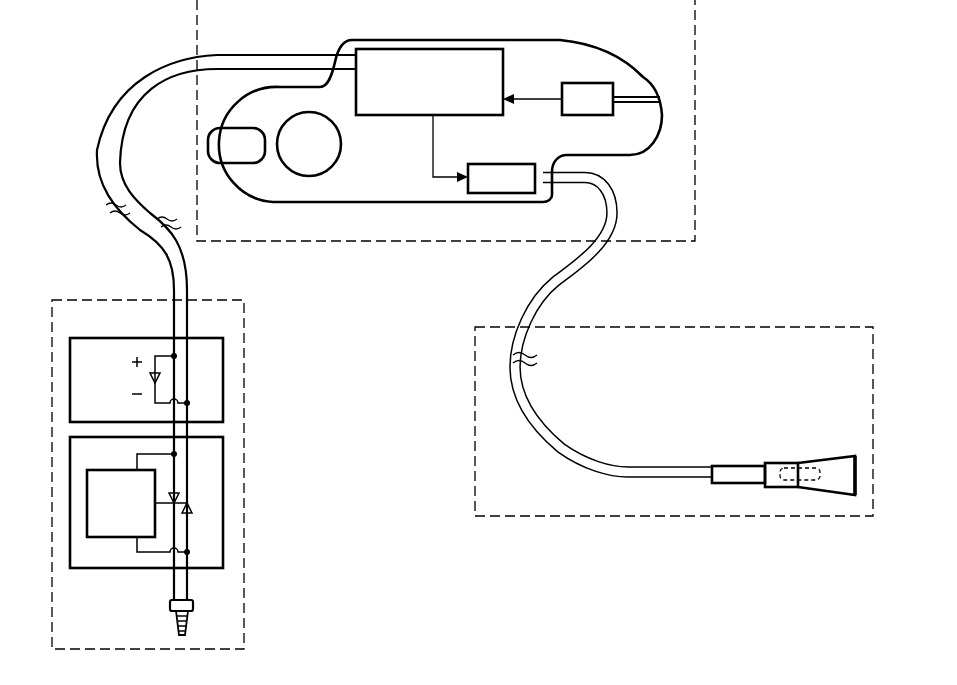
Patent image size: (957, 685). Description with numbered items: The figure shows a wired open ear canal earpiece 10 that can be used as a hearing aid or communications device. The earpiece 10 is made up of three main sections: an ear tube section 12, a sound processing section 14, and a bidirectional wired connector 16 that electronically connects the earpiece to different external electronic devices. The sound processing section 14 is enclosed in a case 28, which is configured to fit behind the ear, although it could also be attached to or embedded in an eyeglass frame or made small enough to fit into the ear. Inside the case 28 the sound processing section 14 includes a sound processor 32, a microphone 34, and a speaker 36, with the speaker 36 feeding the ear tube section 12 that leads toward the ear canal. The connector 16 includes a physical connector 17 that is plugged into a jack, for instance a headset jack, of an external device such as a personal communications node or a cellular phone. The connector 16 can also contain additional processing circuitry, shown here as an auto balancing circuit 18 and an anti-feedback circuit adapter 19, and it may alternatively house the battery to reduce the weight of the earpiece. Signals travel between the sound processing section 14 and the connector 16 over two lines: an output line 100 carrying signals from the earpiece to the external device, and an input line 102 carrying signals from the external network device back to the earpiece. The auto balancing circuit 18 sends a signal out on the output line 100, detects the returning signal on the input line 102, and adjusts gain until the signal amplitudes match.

The earpiece 10 is at (773, 117).
The ear tube section 12 is at (704, 327).
The sound processing section 14 is at (697, 62).
The bidirectional wired connector 16 is at (244, 337).
The physical connector 17 is at (188, 622).
The auto balancing circuit 18 is at (223, 515).
The anti-feedback circuit adapter 19 is at (223, 383).
The case 28 is at (563, 42).
The sound processor 32 is at (453, 50).
The microphone 34 is at (597, 82).
The speaker 36 is at (510, 191).
The output line 100 is at (167, 255).
The input line 102 is at (188, 280).